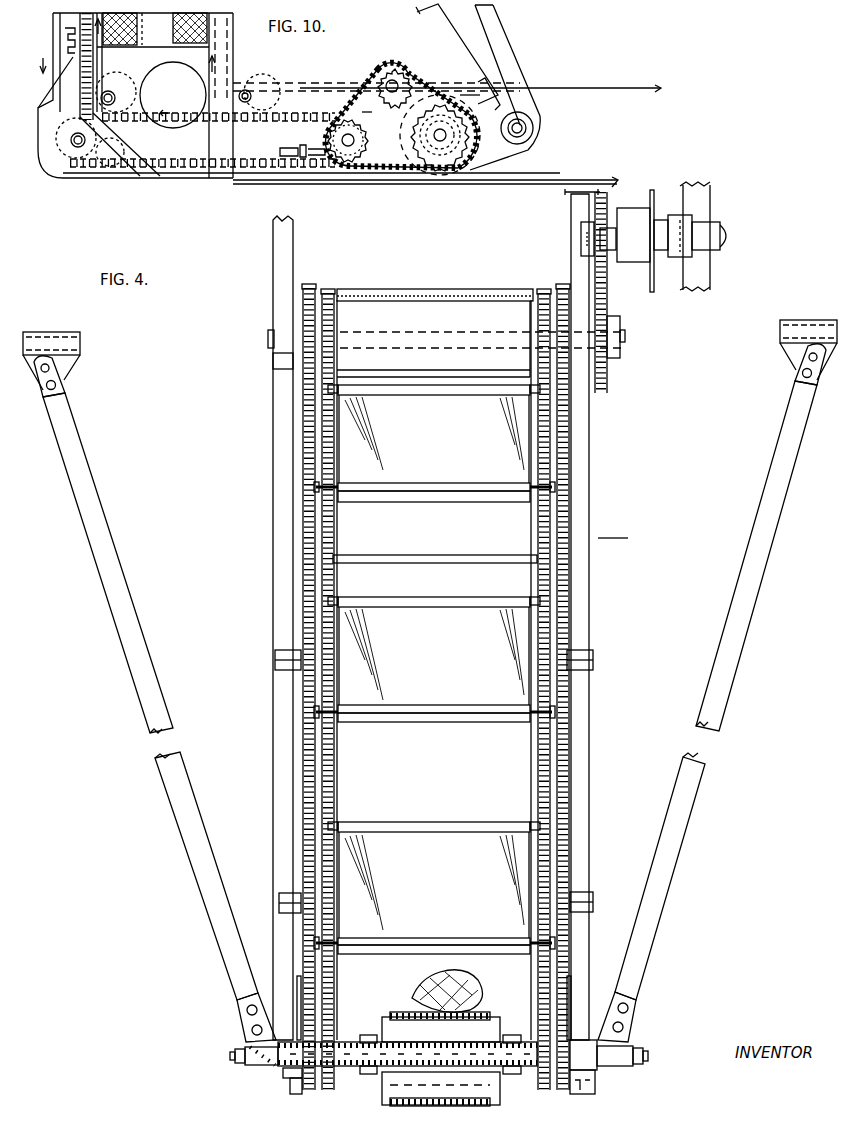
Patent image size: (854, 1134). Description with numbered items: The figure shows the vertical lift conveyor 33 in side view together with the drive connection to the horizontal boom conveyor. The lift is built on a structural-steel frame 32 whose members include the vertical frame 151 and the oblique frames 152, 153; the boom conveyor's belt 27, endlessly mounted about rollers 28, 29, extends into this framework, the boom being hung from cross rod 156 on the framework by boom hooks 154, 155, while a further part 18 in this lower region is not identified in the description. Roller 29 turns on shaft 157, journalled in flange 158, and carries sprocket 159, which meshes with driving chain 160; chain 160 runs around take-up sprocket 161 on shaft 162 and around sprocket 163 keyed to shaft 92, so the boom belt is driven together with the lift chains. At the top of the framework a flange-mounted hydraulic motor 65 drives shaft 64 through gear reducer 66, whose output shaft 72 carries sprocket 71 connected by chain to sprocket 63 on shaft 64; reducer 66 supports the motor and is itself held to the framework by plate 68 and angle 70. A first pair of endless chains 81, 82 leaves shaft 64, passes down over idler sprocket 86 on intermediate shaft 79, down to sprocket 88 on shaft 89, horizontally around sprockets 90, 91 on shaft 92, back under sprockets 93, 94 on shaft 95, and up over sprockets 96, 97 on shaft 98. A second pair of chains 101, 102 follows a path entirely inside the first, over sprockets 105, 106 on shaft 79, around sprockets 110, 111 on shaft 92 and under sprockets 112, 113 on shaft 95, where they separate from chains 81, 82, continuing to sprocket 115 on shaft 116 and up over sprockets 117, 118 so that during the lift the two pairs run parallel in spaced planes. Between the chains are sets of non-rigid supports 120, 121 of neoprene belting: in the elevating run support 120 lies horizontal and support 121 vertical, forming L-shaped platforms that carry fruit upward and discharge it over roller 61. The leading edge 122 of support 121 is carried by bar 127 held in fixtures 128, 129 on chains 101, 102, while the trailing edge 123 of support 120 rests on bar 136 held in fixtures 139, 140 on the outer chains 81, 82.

In FIG. 4, the shaft 18 is at (258, 1068).
In FIG. 10, the conveyor belt 27 is at (605, 92).
In FIG. 4, the conveyor belt 27 is at (480, 1010).
In FIG. 4, the roller 28 is at (425, 1090).
In FIG. 10, the roller 29 is at (374, 121).
In FIG. 10, the frame 32 is at (233, 40).
In FIG. 4, the vertical lift conveyor 33 is at (615, 530).
In FIG. 4, the roller 61 is at (440, 322).
In FIG. 4, the sprocket 63 is at (606, 368).
In FIG. 4, the shaft 64 is at (625, 336).
In FIG. 4, the hydraulic motor 65 is at (726, 232).
In FIG. 4, the gear reducer 66 is at (630, 258).
In FIG. 4, the plate 68 is at (653, 192).
In FIG. 4, the angle 70 is at (702, 193).
In FIG. 4, the sprocket 71 is at (595, 203).
In FIG. 4, the output shaft 72 is at (580, 235).
In FIG. 4, the shaft 79 is at (462, 555).
In FIG. 4, the endless chain 81 is at (560, 430).
In FIG. 10, the endless chain 82 is at (53, 22).
In FIG. 4, the endless chain 82 is at (300, 428).
In FIG. 4, the idler sprocket 86 is at (300, 533).
In FIG. 10, the sprocket 88 is at (105, 150).
In FIG. 10, the shaft 89 is at (77, 147).
In FIG. 4, the sprocket 90 is at (566, 1085).
In FIG. 4, the sprocket 91 is at (309, 1090).
In FIG. 10, the shaft 92 is at (335, 150).
In FIG. 4, the sprocket 93 is at (565, 1000).
In FIG. 10, the sprocket 94 is at (245, 90).
In FIG. 4, the sprocket 94 is at (300, 982).
In FIG. 10, the shaft 95 is at (236, 48).
In FIG. 4, the sprocket 96 is at (560, 290).
In FIG. 4, the sprocket 97 is at (308, 305).
In FIG. 4, the shaft 98 is at (268, 338).
In FIG. 4, the endless chain 101 is at (530, 430).
In FIG. 10, the endless chain 102 is at (95, 62).
In FIG. 4, the endless chain 102 is at (330, 428).
In FIG. 4, the sprocket 105 is at (545, 528).
In FIG. 4, the sprocket 106 is at (334, 530).
In FIG. 4, the sprocket 110 is at (545, 1090).
In FIG. 4, the sprocket 111 is at (330, 1090).
In FIG. 4, the sprocket 112 is at (540, 995).
In FIG. 4, the sprocket 113 is at (330, 995).
In FIG. 10, the sprocket 115 is at (118, 76).
In FIG. 10, the shaft 116 is at (110, 97).
In FIG. 4, the sprocket 117 is at (536, 303).
In FIG. 4, the sprocket 118 is at (332, 308).
In FIG. 4, the non-rigid support 120 is at (408, 502).
In FIG. 4, the non-rigid support 121 is at (434, 666).
In FIG. 4, the leading edge 122 is at (440, 385).
In FIG. 4, the trailing edge 123 is at (486, 475).
In FIG. 4, the bar 127 is at (345, 398).
In FIG. 4, the fixture 128 is at (525, 822).
In FIG. 4, the fixture 129 is at (345, 398).
In FIG. 4, the bar 136 is at (378, 480).
In FIG. 4, the fixture 139 is at (552, 480).
In FIG. 4, the fixture 140 is at (318, 480).
In FIG. 10, the vertical frame 151 is at (505, 32).
In FIG. 4, the oblique frame 152 is at (745, 548).
In FIG. 10, the oblique frame 153 is at (432, 30).
In FIG. 4, the oblique frame 153 is at (122, 565).
In FIG. 4, the boom hook 154 is at (368, 1076).
In FIG. 4, the boom hook 155 is at (512, 1076).
In FIG. 4, the cross rod 156 is at (352, 1050).
In FIG. 10, the shaft 157 is at (440, 141).
In FIG. 10, the flange 158 is at (475, 180).
In FIG. 10, the sprocket 159 is at (410, 130).
In FIG. 10, the driving chain 160 is at (360, 160).
In FIG. 10, the take-up sprocket 161 is at (370, 104).
In FIG. 10, the shaft 162 is at (390, 80).
In FIG. 10, the sprocket 163 is at (375, 110).